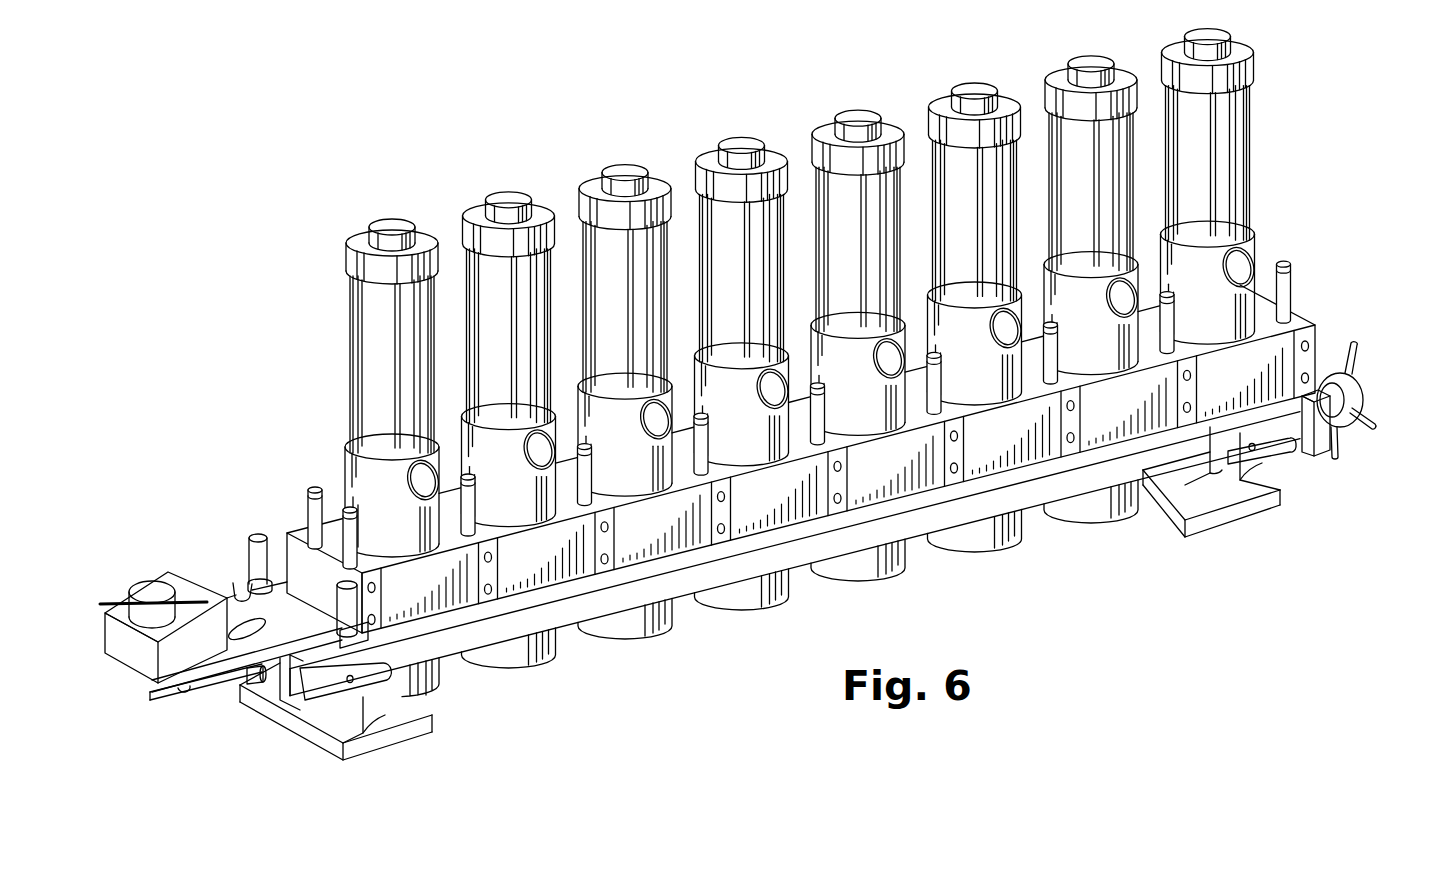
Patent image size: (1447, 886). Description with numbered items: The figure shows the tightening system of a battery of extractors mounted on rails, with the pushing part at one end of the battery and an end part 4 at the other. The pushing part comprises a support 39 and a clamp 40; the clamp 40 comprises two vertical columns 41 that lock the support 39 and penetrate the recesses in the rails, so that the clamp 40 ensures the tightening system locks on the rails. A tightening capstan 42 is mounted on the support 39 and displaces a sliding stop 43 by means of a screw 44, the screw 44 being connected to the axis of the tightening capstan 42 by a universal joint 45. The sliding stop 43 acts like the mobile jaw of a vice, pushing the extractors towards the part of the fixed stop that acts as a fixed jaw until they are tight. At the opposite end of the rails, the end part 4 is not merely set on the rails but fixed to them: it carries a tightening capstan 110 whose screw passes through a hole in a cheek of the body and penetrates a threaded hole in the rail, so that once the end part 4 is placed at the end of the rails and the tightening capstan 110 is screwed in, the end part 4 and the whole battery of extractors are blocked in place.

The end part 4 is at (1324, 315).
The tightening capstan 110 is at (1334, 352).
The support 39 is at (220, 578).
The clamp 40 is at (256, 562).
The vertical columns 41 is at (257, 538).
The tightening capstan 42 is at (143, 595).
The sliding stop 43 is at (275, 688).
The screw 44 is at (238, 682).
The universal joint 45 is at (173, 700).